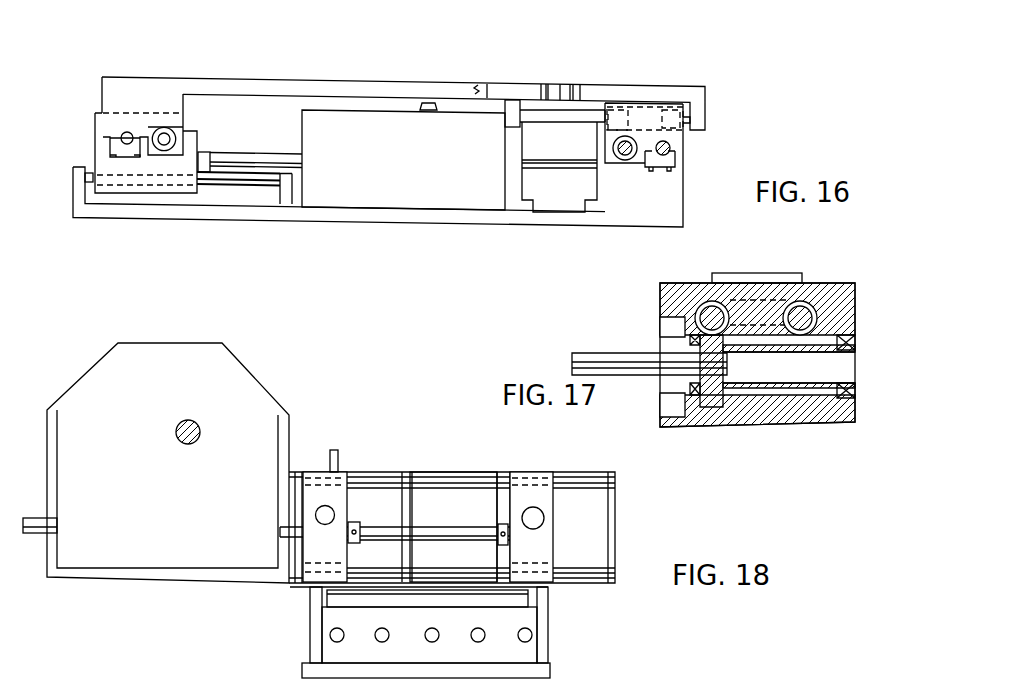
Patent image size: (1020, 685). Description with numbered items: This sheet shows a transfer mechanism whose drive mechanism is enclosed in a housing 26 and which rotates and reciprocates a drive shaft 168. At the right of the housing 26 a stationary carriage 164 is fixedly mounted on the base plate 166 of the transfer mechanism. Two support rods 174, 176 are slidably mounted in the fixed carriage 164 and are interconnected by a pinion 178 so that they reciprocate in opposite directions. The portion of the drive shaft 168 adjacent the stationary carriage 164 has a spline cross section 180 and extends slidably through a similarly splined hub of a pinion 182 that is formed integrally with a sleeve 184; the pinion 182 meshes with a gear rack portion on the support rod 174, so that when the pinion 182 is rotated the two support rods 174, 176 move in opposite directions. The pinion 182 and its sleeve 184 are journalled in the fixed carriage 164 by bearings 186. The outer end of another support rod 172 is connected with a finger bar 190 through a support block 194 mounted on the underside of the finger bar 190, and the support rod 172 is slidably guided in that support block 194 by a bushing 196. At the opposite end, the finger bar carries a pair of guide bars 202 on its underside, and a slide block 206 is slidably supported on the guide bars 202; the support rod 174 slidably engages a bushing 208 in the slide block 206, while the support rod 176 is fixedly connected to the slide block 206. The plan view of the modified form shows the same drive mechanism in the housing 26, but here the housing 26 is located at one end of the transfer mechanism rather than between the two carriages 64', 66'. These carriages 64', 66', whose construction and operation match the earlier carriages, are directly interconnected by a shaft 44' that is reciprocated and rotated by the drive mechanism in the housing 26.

In FIG. 16, the housing 26 is at (393, 192).
In FIG. 18, the housing 26 is at (261, 375).
In FIG. 18, the shaft 44' is at (395, 517).
In FIG. 18, the carriage 64' is at (349, 508).
In FIG. 18, the carriage 66' is at (531, 509).
In FIG. 16, the stationary carriage 164 is at (683, 203).
In FIG. 16, the base plate 166 is at (507, 220).
In FIG. 16, the drive shaft 168 is at (258, 157).
In FIG. 16, the support rod 172 is at (190, 130).
In FIG. 17, the support rod 174 is at (703, 306).
In FIG. 16, the support rod 176 is at (677, 155).
In FIG. 17, the support rod 176 is at (808, 305).
In FIG. 17, the pinion 178 is at (760, 283).
In FIG. 16, the spline cross section 180 is at (535, 172).
In FIG. 17, the spline cross section 180 is at (630, 355).
In FIG. 17, the pinion 182 is at (713, 398).
In FIG. 17, the sleeve 184 is at (820, 390).
In FIG. 17, the bearings 186 is at (853, 346).
In FIG. 16, the finger bar 190 is at (278, 93).
In FIG. 16, the support block 194 is at (172, 100).
In FIG. 16, the bushing 196 is at (178, 137).
In FIG. 16, the guide bars 202 is at (580, 115).
In FIG. 16, the slide block 206 is at (648, 110).
In FIG. 16, the bushing 208 is at (620, 160).